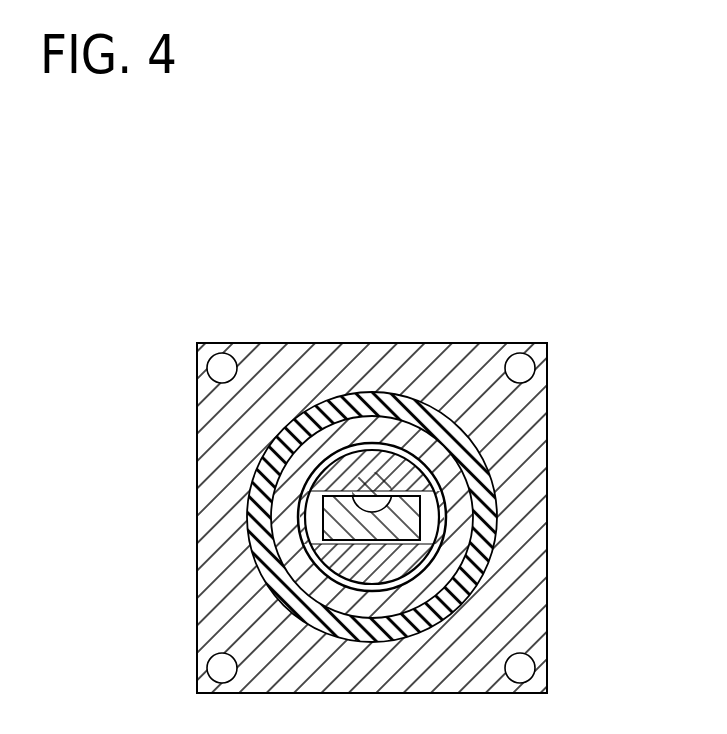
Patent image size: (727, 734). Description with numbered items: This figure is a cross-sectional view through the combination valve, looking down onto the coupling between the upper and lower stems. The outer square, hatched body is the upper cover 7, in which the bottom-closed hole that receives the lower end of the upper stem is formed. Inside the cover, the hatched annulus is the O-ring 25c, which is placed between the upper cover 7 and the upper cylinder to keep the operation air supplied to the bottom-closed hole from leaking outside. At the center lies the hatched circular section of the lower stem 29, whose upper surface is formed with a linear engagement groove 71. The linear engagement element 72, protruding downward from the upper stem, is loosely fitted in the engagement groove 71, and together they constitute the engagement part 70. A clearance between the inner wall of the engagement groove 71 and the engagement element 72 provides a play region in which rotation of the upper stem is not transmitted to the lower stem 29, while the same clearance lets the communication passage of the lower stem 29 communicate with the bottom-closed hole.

The upper cover 7 is at (442, 473).
The O-ring 25c is at (488, 527).
The engagement part 70 is at (412, 450).
The lower stem 29 is at (333, 480).
The engagement element 72 is at (387, 530).
The engagement groove 71 is at (392, 493).